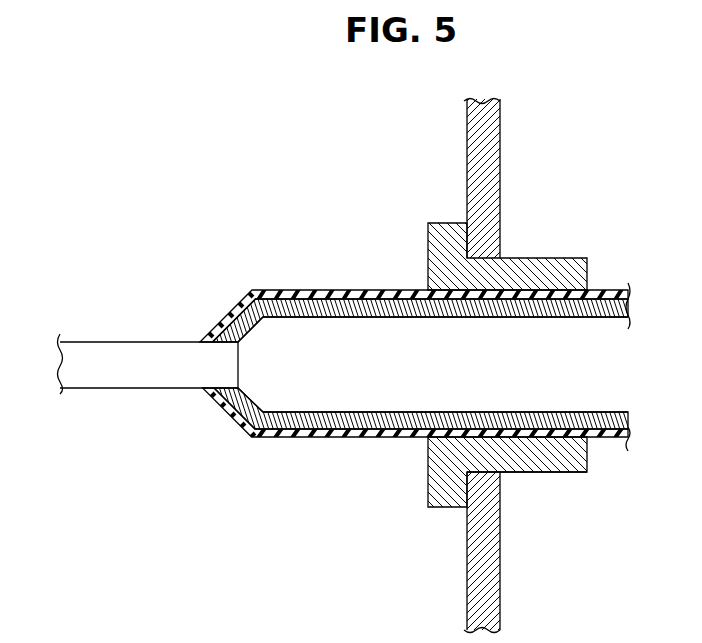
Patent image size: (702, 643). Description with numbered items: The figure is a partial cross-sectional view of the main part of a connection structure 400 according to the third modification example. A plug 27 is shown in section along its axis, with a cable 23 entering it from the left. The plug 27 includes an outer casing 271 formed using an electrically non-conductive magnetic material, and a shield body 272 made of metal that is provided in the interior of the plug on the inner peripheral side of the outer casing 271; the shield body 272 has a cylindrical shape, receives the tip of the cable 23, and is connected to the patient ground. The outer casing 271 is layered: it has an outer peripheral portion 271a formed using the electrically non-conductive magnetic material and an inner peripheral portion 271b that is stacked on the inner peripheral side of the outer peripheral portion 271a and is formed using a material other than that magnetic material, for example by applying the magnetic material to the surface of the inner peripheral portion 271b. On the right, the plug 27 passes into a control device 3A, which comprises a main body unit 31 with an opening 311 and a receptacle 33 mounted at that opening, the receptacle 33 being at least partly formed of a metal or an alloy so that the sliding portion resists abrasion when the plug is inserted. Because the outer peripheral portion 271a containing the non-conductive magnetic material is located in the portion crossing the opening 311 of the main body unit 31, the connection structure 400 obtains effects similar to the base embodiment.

The connection structure 400 is at (373, 137).
The cable 23 is at (128, 341).
The plug 27 is at (419, 385).
The outer casing 271 is at (419, 409).
The outer peripheral portion 271a is at (219, 400).
The inner peripheral portion 271b is at (292, 425).
The shield body 272 is at (365, 380).
The control device 3A is at (351, 360).
The main body unit 31 is at (500, 192).
The receptacle 33 is at (525, 258).
The opening 311 is at (480, 470).